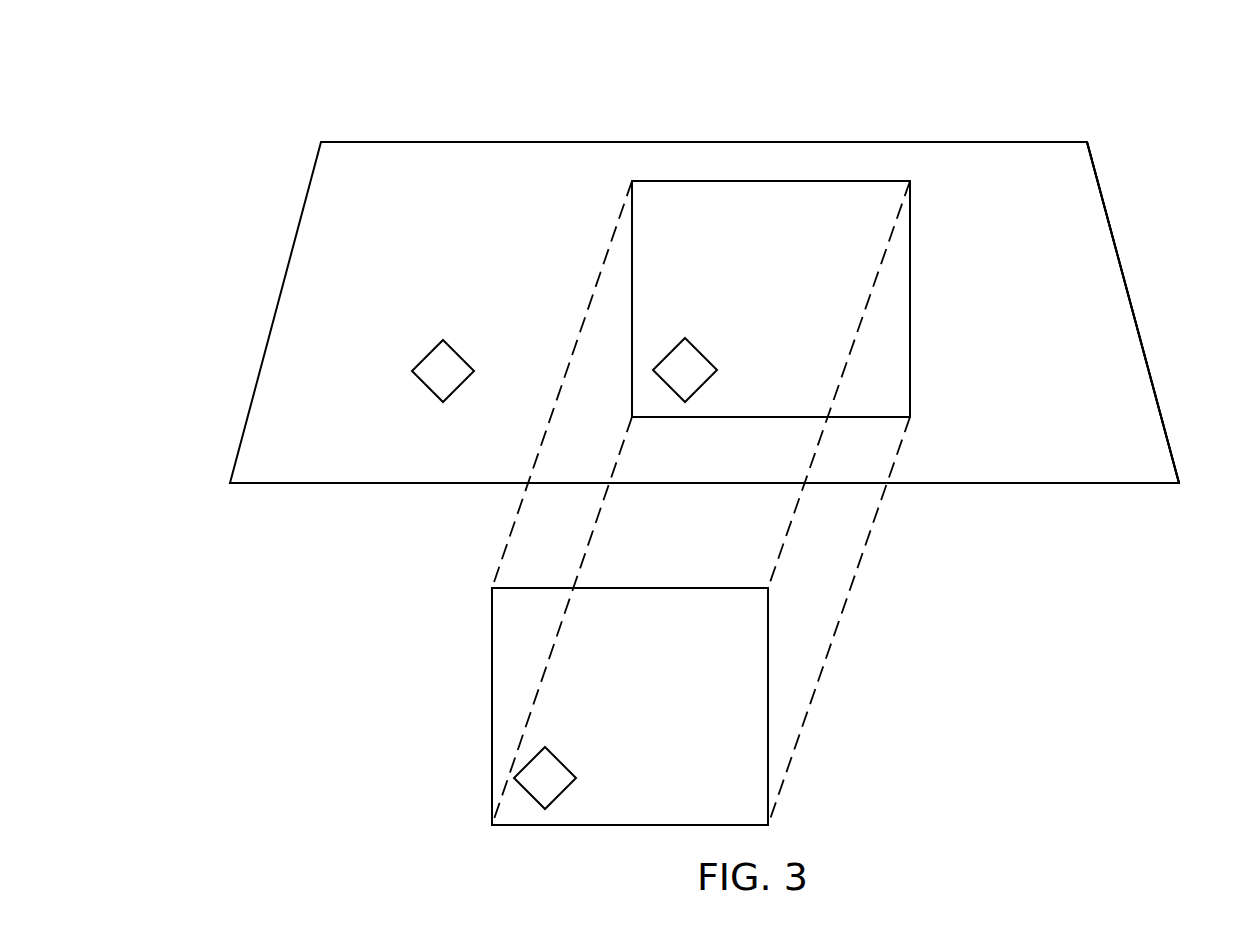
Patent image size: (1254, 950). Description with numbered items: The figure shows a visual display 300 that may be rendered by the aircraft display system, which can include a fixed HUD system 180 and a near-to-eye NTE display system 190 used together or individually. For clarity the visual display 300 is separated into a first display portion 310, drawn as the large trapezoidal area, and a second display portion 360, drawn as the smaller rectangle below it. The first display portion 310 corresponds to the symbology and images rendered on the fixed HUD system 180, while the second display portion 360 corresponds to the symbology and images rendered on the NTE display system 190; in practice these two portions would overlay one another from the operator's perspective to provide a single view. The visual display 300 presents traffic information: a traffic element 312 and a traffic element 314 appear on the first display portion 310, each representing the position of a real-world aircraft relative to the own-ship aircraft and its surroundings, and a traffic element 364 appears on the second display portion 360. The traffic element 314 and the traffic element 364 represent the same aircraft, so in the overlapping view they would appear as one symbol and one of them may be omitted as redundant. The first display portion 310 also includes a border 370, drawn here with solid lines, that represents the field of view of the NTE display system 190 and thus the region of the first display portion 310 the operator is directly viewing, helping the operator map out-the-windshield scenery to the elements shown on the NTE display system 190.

The visual display 300 is at (964, 121).
The first display portion 310 is at (1112, 220).
The fixed HUD system 180 is at (1175, 246).
The border 370 is at (910, 258).
The second display portion 360 is at (562, 825).
The NTE display system 190 is at (468, 722).
The traffic element 312 is at (457, 353).
The traffic element 314 is at (700, 352).
The traffic element 364 is at (558, 763).